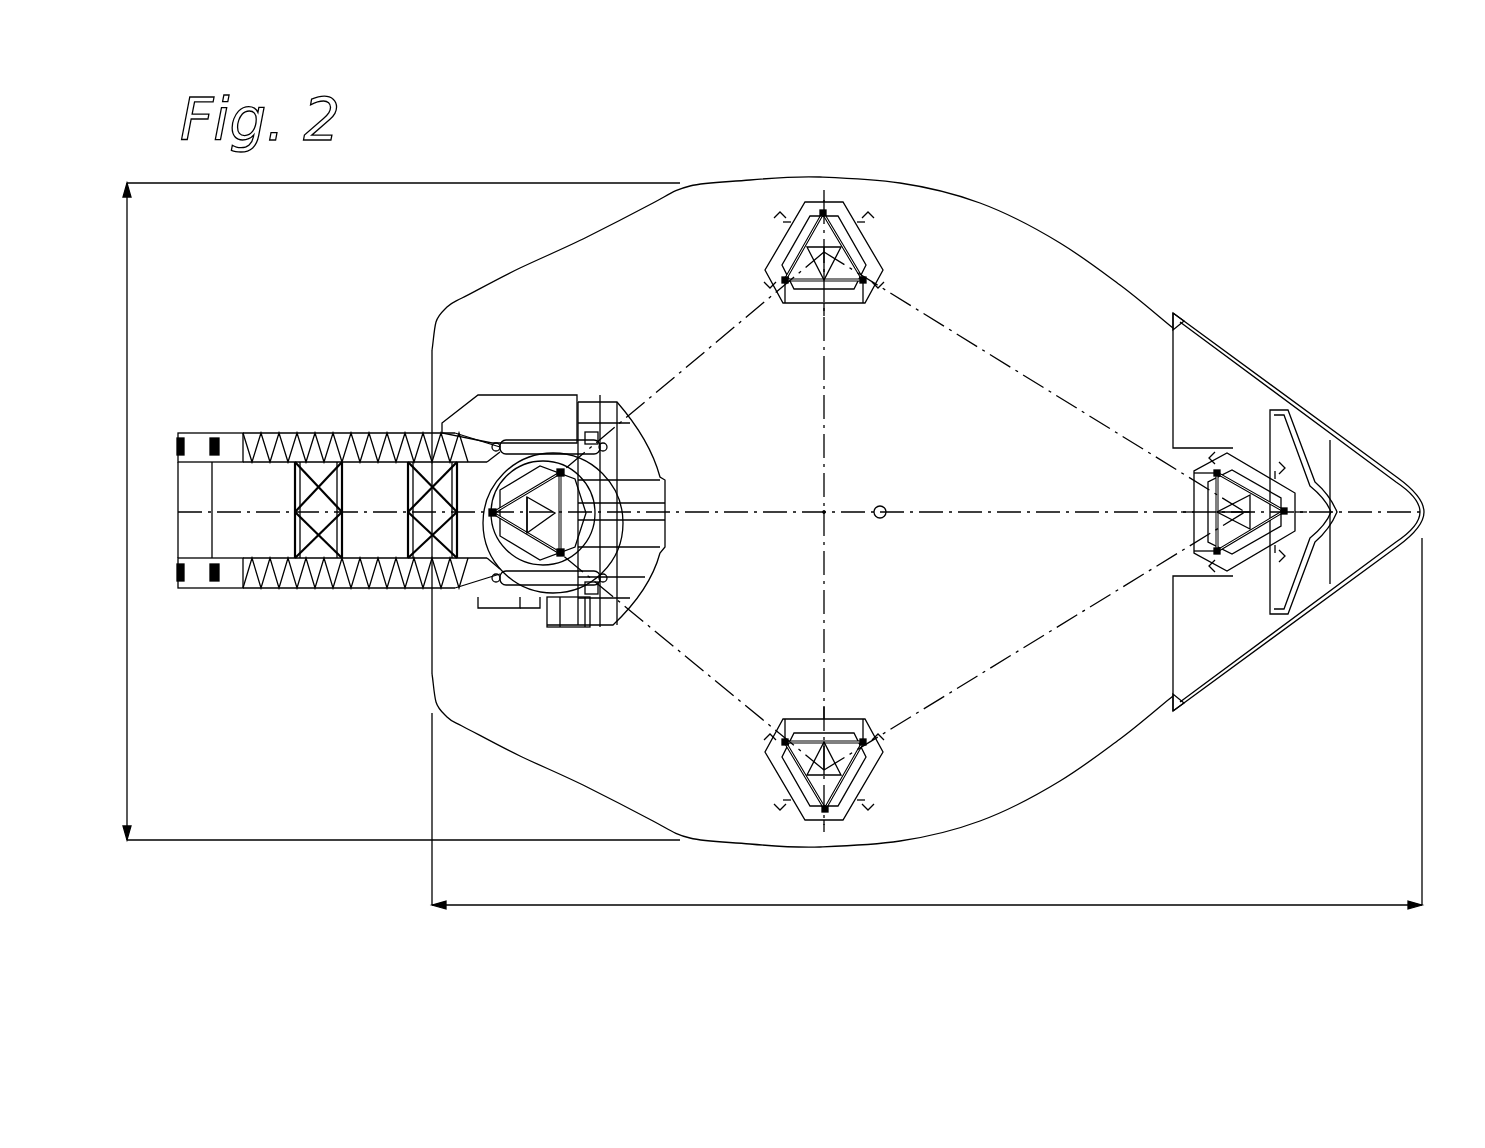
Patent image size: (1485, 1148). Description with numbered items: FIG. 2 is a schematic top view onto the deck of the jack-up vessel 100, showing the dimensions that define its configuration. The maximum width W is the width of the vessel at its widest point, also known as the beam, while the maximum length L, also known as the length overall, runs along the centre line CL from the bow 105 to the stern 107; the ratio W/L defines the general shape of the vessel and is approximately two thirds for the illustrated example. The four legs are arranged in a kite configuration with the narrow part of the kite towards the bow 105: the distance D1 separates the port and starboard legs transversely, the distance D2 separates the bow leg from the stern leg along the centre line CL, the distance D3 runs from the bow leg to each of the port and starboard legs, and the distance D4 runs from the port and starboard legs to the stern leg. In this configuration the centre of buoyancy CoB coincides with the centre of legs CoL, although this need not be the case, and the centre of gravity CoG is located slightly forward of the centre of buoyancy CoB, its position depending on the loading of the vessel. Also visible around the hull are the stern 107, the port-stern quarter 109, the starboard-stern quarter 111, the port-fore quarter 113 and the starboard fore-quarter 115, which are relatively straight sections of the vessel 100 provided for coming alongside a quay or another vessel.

The vessel 100 is at (909, 511).
The bow 105 is at (1422, 508).
The stern 107 is at (432, 403).
The port-stern quarter 109 is at (528, 753).
The starboard-stern quarter 111 is at (530, 266).
The port-fore quarter 113 is at (1100, 755).
The starboard fore-quarter 115 is at (1061, 245).
The centre line CL is at (1370, 511).
The distance between port leg and starboard leg D1 is at (826, 427).
The distance between bow leg and stern leg D2 is at (1052, 511).
The distance between bow leg and port/starboard legs D3 is at (1064, 407).
The distance between port/starboard legs and stern leg D4 is at (698, 378).
The centre of buoyancy CoB is at (819, 503).
The centre of gravity CoG is at (880, 505).
The centre of legs CoL is at (812, 518).
The maximum width W is at (389, 511).
The maximum length L is at (927, 723).